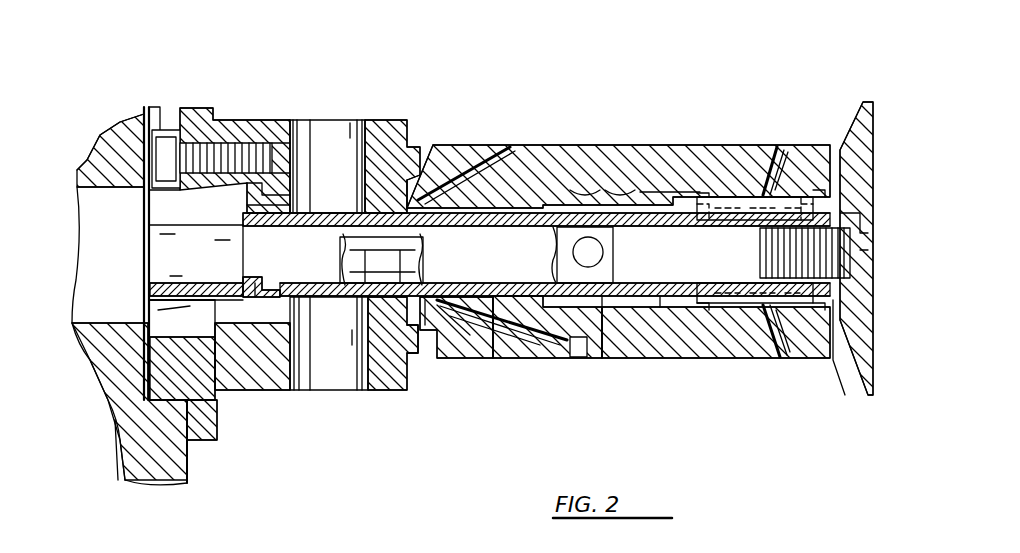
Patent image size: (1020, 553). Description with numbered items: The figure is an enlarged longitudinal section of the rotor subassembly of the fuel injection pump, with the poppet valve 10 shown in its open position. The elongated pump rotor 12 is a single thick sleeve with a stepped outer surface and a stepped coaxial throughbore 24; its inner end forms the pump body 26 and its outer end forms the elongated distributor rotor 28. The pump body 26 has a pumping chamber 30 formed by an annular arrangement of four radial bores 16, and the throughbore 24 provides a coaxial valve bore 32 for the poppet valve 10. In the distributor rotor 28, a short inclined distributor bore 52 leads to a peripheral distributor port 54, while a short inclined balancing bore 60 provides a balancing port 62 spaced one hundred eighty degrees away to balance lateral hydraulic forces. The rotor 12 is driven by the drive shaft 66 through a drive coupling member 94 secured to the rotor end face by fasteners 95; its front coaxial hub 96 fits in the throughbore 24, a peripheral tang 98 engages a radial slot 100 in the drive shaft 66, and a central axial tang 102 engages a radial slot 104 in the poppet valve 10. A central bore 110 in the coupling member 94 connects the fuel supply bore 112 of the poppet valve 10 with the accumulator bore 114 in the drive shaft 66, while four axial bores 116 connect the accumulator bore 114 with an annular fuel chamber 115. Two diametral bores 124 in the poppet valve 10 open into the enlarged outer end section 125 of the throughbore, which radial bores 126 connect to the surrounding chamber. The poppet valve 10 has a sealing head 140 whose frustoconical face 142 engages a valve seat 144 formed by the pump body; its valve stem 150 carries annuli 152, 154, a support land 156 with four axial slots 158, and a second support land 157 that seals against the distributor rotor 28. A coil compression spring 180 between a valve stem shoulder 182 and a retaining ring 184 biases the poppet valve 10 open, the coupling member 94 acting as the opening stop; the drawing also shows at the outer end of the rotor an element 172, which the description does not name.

The poppet valve 10 is at (602, 310).
The pump rotor 12 is at (500, 330).
The radial bores 16 is at (365, 122).
The rotor throughbore 24 is at (612, 185).
The pump body 26 is at (306, 70).
The distributor rotor 28 is at (736, 58).
The pumping chamber 30 is at (345, 164).
The valve bore 32 is at (555, 160).
The distributor bore 52 is at (548, 330).
The distributor port 54 is at (580, 360).
The balancing bore 60 is at (506, 148).
The balancing port 62 is at (535, 145).
The drive shaft 66 is at (118, 430).
The drive coupling member 94 is at (146, 212).
The fasteners 95 is at (166, 150).
The front coaxial hub 96 is at (222, 238).
The radially extending tang 98 is at (205, 470).
The radial slot 100 is at (190, 470).
The axially extending tang 102 is at (248, 290).
The radial slot 104 is at (225, 300).
The central coaxial bore 110 is at (165, 290).
The fuel supply bore 112 is at (505, 283).
The accumulator bore 114 is at (95, 204).
The annular fuel chamber 115 is at (268, 336).
The axial bores 116 is at (150, 330).
The diametral bores 124 is at (570, 250).
The enlarged outer end section 125 is at (283, 150).
The radial bores 126 is at (798, 145).
The sealing head 140 is at (248, 258).
The frustoconical face 142 is at (278, 222).
The valve seat 144 is at (285, 200).
The valve stem 150 is at (660, 300).
The peripheral annulus 152 is at (312, 325).
The peripheral annulus 154 is at (428, 335).
The valve support land 156 is at (366, 306).
The second valve support land 157 is at (492, 330).
The axial slots 158 is at (395, 256).
The flange 172 is at (870, 102).
The coil compression spring 180 is at (724, 195).
The valve stem shoulder 182 is at (697, 224).
The retaining ring 184 is at (858, 350).